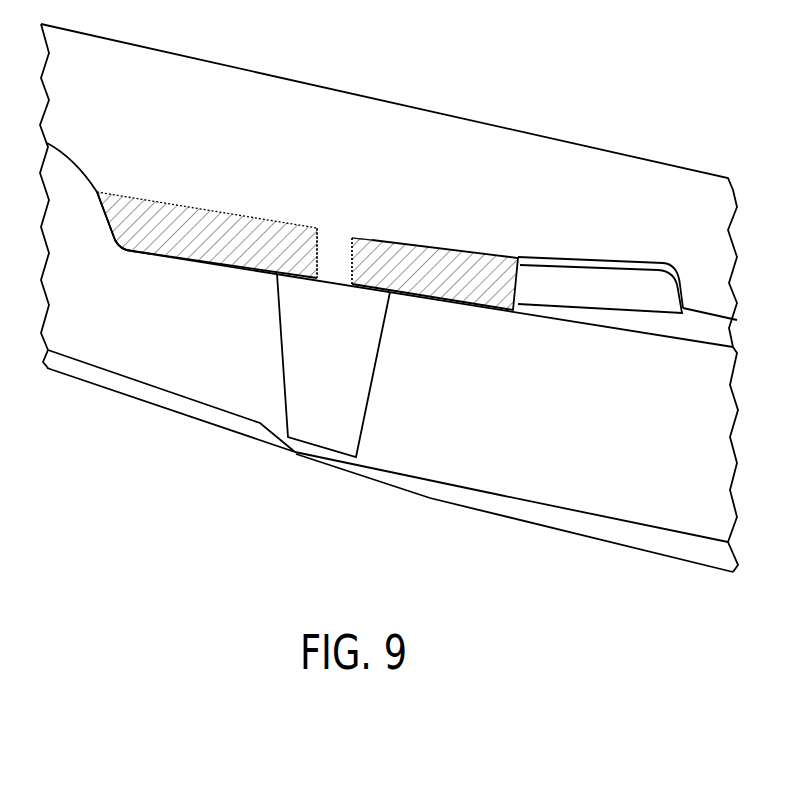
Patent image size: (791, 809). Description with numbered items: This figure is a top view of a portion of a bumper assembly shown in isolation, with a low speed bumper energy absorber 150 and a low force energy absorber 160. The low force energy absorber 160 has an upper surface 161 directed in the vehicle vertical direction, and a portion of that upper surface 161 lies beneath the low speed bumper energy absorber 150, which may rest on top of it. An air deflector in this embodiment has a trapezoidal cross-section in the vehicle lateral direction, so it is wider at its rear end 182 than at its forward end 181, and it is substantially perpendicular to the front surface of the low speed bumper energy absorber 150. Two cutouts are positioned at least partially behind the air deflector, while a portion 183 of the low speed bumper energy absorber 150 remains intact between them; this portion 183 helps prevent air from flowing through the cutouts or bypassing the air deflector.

The low speed bumper energy absorber 150 is at (668, 168).
The low force energy absorber 160 is at (437, 512).
The upper surface 161 is at (567, 433).
The forward end 181 is at (335, 455).
The rear end 182 is at (342, 280).
The portion 183 is at (368, 258).